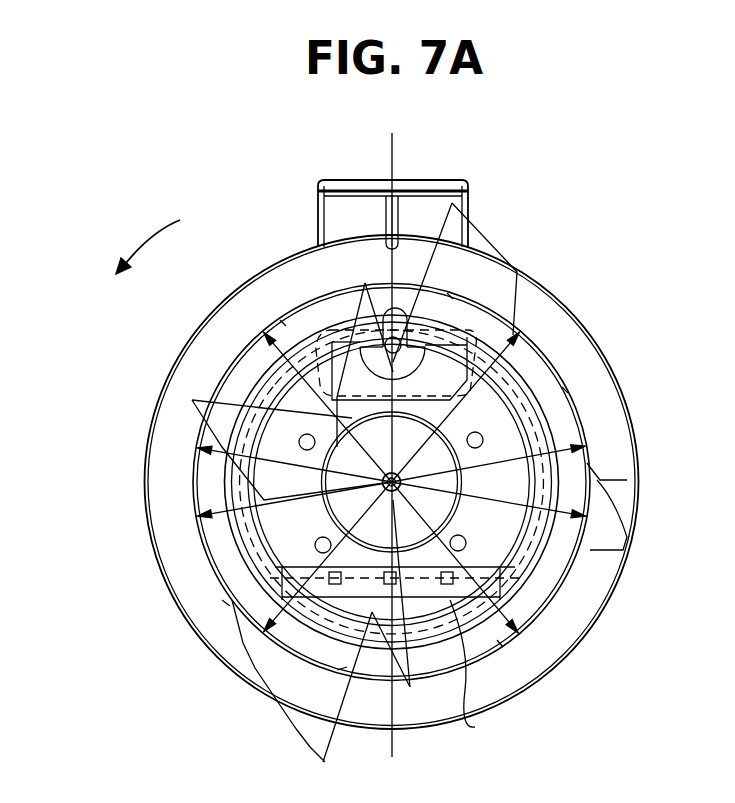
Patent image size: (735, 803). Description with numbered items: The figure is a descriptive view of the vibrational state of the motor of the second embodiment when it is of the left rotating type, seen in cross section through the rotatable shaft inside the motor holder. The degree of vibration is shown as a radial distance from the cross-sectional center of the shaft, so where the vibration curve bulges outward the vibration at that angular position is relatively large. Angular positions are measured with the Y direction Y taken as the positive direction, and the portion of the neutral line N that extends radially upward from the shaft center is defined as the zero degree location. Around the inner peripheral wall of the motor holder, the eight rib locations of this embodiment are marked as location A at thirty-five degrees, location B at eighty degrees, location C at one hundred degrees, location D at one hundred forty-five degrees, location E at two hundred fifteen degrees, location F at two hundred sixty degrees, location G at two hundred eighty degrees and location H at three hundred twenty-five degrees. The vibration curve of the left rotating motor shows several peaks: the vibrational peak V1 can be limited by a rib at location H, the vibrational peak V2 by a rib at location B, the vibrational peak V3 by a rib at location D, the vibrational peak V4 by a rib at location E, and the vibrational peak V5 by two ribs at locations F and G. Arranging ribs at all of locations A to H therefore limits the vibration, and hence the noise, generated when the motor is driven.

The location A is at (317, 395).
The location B is at (282, 454).
The location C is at (282, 507).
The location D is at (318, 572).
The location E is at (465, 571).
The location F is at (500, 507).
The location G is at (501, 457).
The location H is at (462, 391).
The vibrational peak V1 is at (490, 252).
The vibrational peak V2 is at (192, 402).
The vibrational peak V3 is at (292, 725).
The vibrational peak V4 is at (441, 631).
The vibrational peak V5 is at (627, 480).
The neutral line N is at (391, 460).
The Y direction Y is at (147, 235).